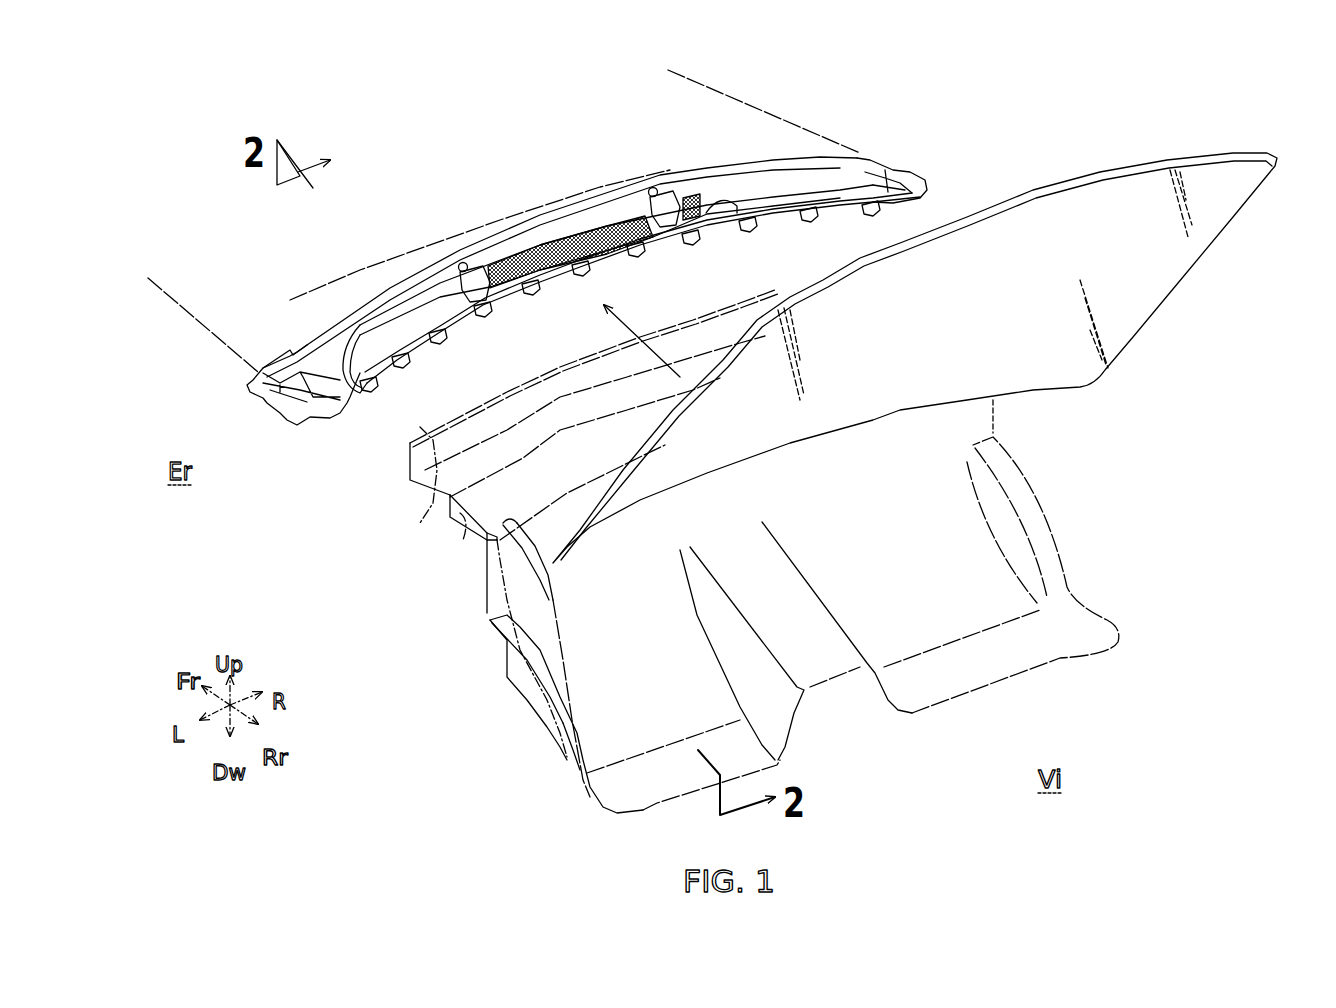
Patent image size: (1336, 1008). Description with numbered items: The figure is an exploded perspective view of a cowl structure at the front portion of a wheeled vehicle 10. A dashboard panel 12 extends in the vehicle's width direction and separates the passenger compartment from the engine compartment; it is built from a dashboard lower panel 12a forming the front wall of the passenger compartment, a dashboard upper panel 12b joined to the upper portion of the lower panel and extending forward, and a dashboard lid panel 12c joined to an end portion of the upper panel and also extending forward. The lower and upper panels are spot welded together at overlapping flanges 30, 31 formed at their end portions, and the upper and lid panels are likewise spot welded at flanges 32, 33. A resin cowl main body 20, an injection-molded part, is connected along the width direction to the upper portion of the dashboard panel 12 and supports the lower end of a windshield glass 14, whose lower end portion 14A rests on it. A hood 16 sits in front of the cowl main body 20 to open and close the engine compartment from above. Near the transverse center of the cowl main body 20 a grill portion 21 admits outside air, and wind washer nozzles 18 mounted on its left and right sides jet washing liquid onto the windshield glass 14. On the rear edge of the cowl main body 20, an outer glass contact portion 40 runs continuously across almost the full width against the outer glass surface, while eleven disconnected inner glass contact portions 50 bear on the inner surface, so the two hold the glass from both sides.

The wheeled vehicle 10 is at (1106, 96).
The dashboard panel 12 is at (484, 616).
The dashboard lower panel 12a is at (503, 653).
The dashboard upper panel 12b is at (467, 515).
The dashboard lid panel 12c is at (420, 427).
The windshield glass 14 is at (1040, 191).
The windshield lower end portion 14A is at (1150, 283).
The hood 16 is at (742, 98).
The wind washer nozzle 18 is at (467, 273).
The cowl main body 20 is at (812, 152).
The grill portion 21 is at (543, 233).
The flange 30 is at (523, 700).
The flange 31 is at (563, 750).
The flange 32 is at (445, 505).
The flange 33 is at (458, 513).
The outer glass contact portion 40 is at (420, 333).
The inner glass contact portion 50 is at (395, 355).